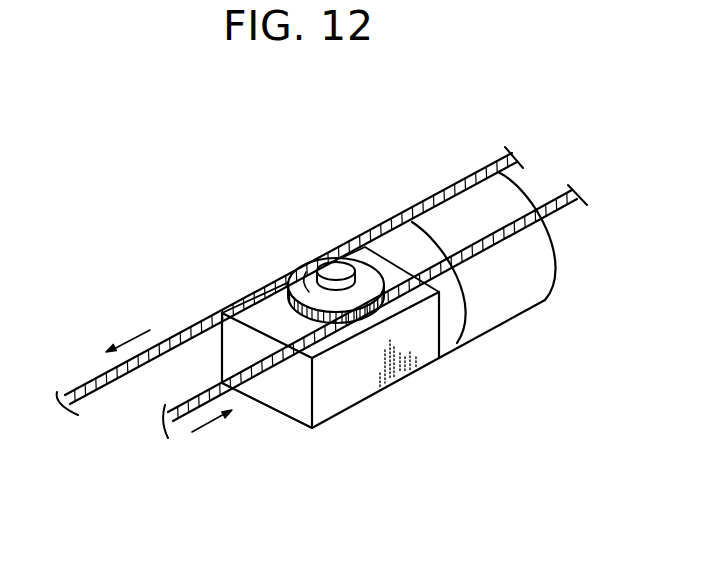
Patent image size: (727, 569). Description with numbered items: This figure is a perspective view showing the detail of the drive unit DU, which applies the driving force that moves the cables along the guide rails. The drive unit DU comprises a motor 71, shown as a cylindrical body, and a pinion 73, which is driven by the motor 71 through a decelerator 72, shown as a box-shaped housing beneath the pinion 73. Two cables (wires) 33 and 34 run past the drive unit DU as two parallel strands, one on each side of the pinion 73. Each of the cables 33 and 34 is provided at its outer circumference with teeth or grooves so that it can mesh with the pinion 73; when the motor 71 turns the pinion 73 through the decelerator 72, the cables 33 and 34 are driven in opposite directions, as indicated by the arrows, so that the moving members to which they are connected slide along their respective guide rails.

The cable 33 is at (78, 392).
The cable 34 is at (236, 392).
The motor 71 is at (540, 289).
The decelerator 72 is at (358, 390).
The pinion 73 is at (323, 258).
The drive unit DU is at (414, 318).